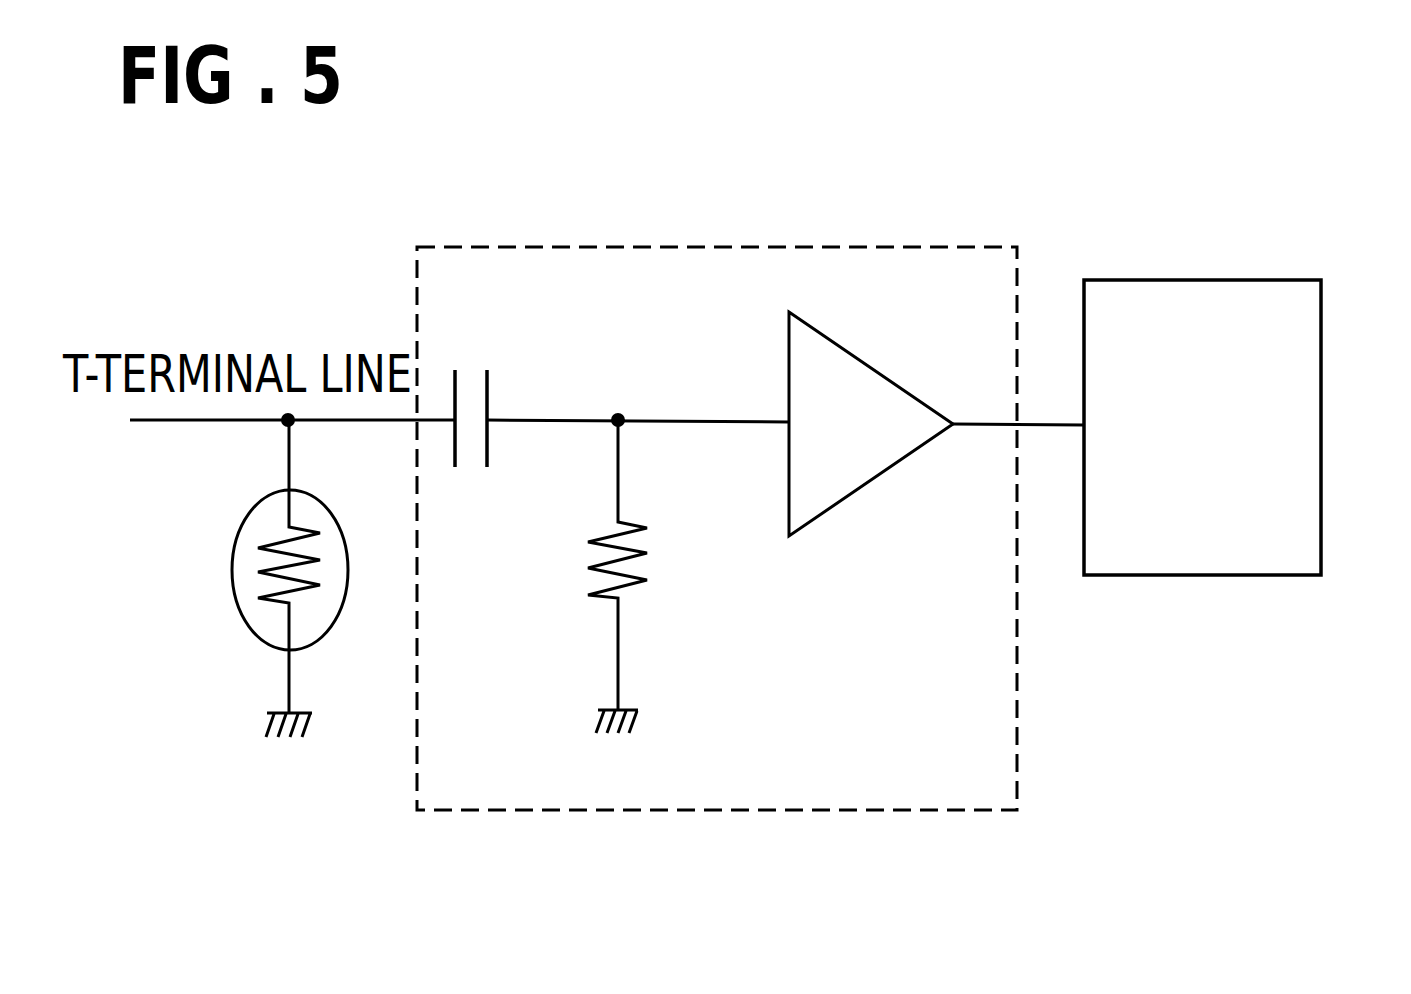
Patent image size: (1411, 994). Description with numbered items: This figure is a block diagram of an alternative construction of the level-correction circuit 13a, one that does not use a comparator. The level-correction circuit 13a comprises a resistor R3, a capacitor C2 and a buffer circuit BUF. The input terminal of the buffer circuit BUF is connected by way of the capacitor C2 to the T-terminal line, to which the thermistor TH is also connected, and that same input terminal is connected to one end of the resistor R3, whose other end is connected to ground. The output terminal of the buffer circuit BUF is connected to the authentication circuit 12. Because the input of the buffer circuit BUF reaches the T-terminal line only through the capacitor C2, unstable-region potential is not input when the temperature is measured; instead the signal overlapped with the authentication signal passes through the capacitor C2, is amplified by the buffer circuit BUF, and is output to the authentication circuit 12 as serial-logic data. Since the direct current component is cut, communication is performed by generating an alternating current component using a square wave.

The level-correction circuit 13a is at (673, 242).
The authentication circuit 12 is at (1203, 273).
The thermistor TH is at (242, 578).
The capacitor C2 is at (472, 451).
The resistor R3 is at (643, 576).
The buffer circuit BUF is at (874, 407).